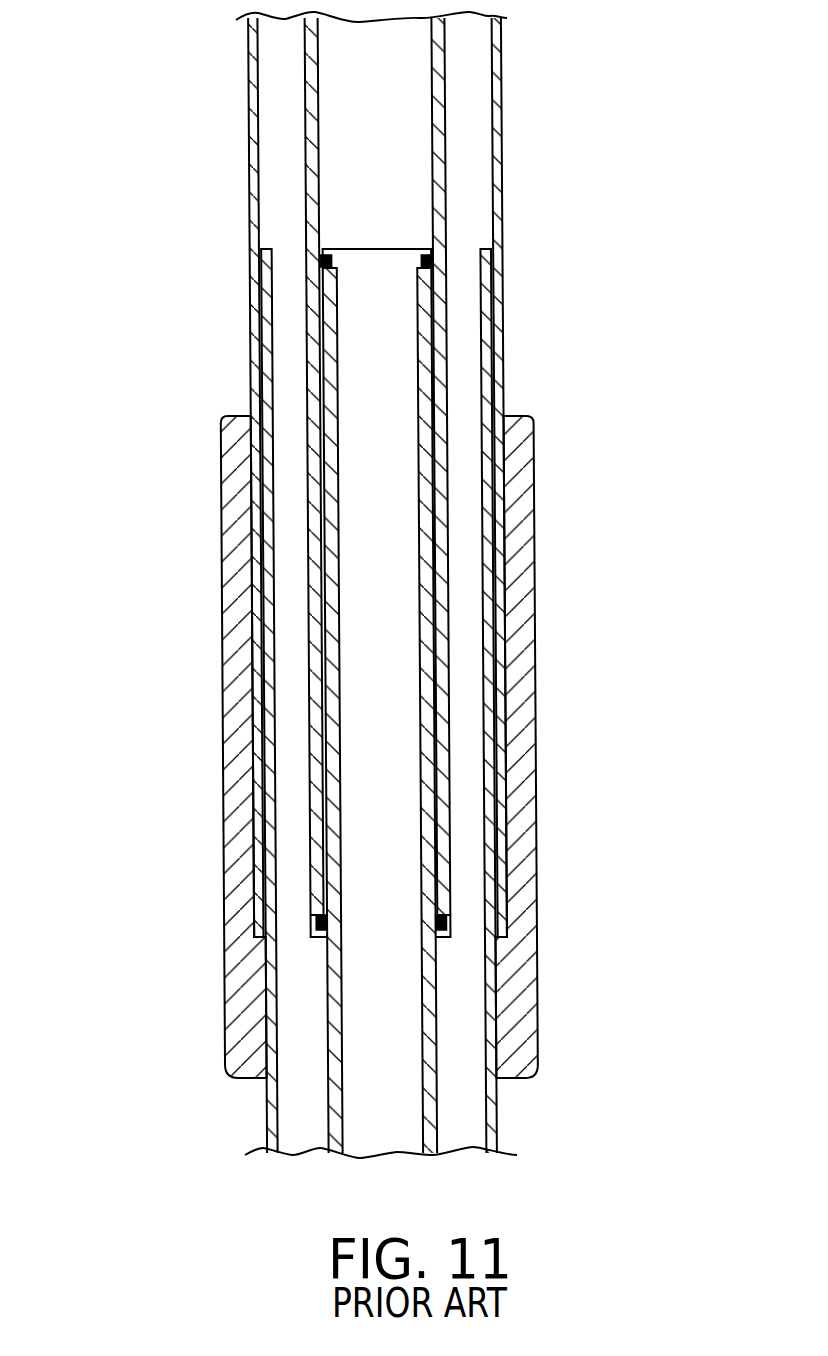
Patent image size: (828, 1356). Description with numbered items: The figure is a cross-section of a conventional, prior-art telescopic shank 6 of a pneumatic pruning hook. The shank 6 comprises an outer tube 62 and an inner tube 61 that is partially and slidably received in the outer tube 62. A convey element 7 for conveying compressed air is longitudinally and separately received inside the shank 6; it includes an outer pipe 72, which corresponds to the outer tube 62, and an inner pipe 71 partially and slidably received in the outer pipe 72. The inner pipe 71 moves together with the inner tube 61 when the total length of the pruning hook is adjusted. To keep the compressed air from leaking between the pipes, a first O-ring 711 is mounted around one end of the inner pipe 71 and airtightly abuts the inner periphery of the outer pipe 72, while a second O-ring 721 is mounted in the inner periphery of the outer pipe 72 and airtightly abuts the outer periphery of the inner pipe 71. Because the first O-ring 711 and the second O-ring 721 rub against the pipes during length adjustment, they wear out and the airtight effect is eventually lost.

The telescopic shank 6 is at (302, 585).
The inner tube 61 is at (273, 1122).
The outer tube 62 is at (253, 141).
The convey element 7 is at (401, 585).
The inner pipe 71 is at (427, 1105).
The outer pipe 72 is at (437, 99).
The first O-ring 711 is at (320, 262).
The second O-ring 721 is at (447, 921).